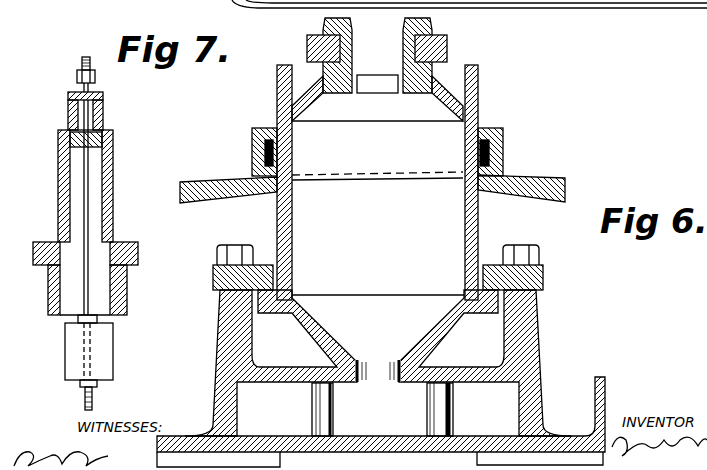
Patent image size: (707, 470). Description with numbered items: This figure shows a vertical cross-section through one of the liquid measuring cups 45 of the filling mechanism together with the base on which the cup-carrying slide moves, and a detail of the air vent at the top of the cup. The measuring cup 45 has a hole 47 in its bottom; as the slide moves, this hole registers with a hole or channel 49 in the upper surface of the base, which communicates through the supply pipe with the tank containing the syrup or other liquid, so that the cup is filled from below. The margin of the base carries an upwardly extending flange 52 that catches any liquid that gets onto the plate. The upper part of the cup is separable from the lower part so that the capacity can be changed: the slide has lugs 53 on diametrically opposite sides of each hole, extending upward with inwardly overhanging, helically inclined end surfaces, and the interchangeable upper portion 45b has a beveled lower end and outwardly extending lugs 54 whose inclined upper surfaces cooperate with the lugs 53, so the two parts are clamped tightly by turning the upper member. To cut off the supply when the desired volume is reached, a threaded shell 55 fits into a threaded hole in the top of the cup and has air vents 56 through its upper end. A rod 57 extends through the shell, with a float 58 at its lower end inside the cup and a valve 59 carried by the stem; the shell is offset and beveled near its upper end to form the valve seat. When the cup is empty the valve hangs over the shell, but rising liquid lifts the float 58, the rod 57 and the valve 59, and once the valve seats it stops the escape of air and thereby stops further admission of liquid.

In FIG. 6, the liquid measuring cup 45 is at (377, 182).
In FIG. 6, the upper portion of measuring cup 45b is at (377, 70).
In FIG. 6, the hole in cup bottom 47 is at (378, 363).
In FIG. 6, the supply hole or channel 49 is at (381, 378).
In FIG. 6, the upwardly extending flange 52 is at (605, 385).
In FIG. 6, the lug on slide 53 is at (260, 155).
In FIG. 6, the outwardly extending lug 54 is at (482, 148).
In FIG. 7, the threaded shell 55 is at (112, 173).
In FIG. 7, the air vent 56 is at (103, 100).
In FIG. 7, the rod 57 is at (86, 217).
In FIG. 7, the float 58 is at (107, 350).
In FIG. 7, the valve 59 is at (113, 132).